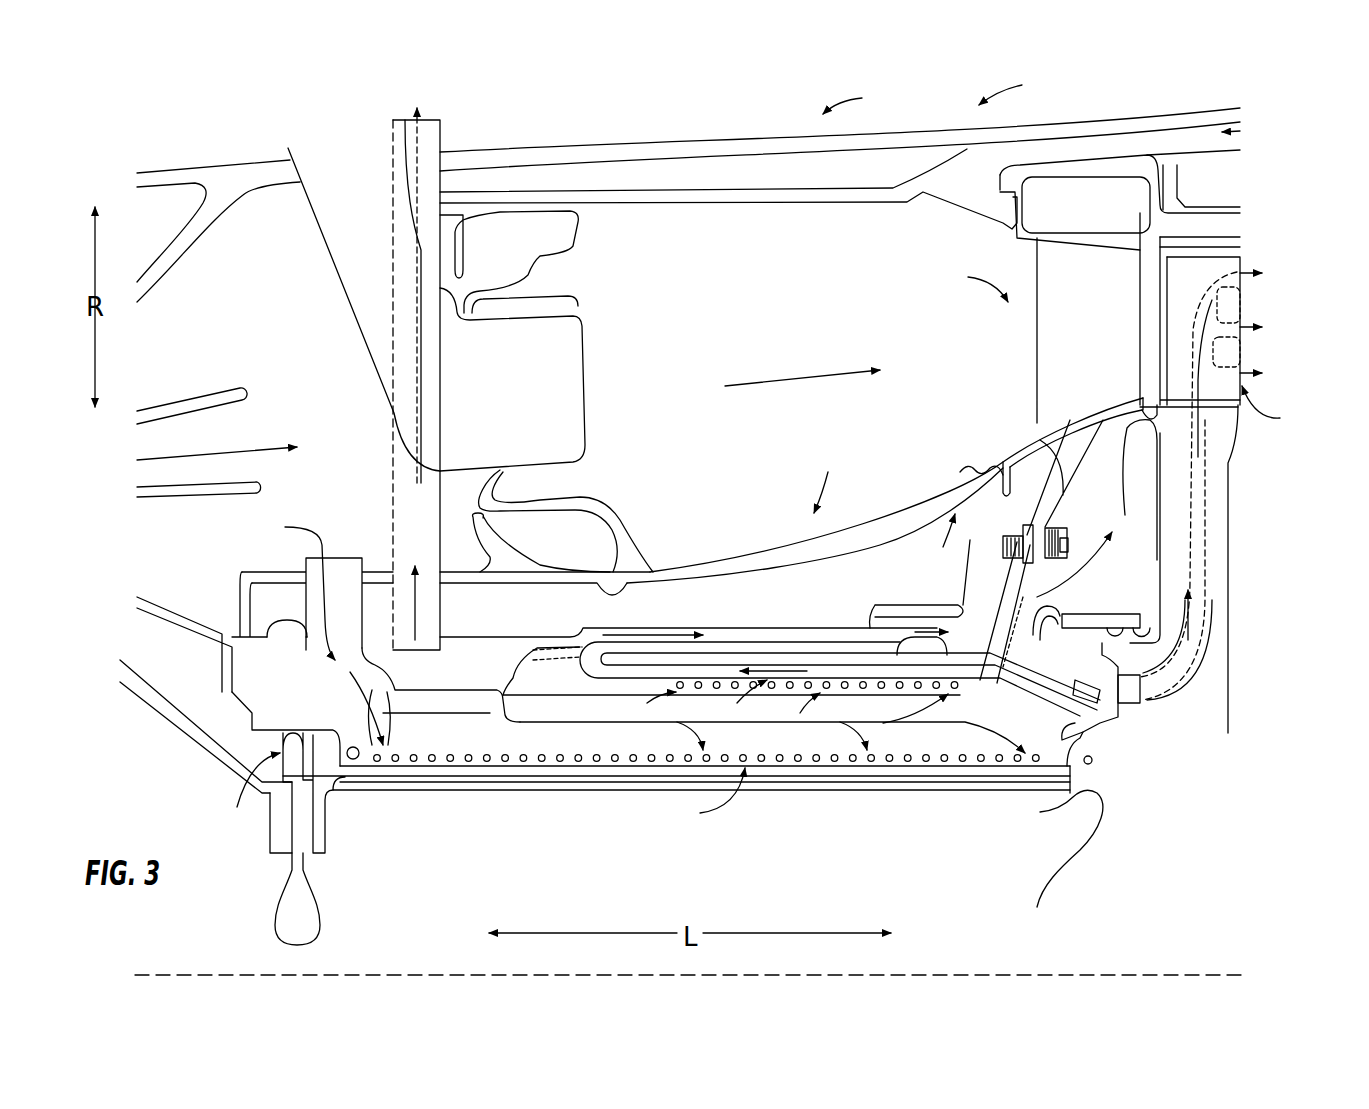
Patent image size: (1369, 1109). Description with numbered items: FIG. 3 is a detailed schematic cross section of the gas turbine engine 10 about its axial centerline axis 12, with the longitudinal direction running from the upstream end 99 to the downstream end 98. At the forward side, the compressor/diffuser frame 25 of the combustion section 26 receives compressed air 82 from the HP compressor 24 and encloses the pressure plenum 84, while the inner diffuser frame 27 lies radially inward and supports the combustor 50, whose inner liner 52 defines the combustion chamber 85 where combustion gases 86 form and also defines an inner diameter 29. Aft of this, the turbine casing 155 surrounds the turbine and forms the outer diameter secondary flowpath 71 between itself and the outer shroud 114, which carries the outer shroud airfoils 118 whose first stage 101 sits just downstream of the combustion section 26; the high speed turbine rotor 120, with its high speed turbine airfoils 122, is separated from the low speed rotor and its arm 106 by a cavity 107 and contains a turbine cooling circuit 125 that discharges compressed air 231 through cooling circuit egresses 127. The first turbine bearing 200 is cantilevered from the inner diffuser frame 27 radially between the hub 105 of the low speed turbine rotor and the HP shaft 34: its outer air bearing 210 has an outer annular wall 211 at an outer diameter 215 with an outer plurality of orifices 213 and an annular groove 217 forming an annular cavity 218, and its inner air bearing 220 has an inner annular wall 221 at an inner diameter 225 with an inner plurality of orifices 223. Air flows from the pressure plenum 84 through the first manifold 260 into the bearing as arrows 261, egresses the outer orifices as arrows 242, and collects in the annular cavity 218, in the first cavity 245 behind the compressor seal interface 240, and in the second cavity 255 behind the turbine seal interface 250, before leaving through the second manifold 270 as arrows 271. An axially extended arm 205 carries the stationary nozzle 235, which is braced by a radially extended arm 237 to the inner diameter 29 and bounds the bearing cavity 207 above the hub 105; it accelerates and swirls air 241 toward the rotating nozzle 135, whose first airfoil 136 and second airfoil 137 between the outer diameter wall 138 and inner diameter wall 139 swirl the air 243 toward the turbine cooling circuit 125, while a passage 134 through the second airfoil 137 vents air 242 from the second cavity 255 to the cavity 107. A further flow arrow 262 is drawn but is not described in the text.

The gas turbine engine 10 is at (1015, 84).
The axial centerline axis 12 is at (165, 975).
The HP compressor 24 is at (177, 716).
The compressor/diffuser frame 25 is at (704, 144).
The combustion section 26 is at (856, 95).
The inner diffuser frame 27 is at (183, 622).
The inner diameter 29 is at (570, 475).
The HP shaft 34 is at (828, 780).
The combustor 50 is at (829, 477).
The inner liner 52 is at (835, 560).
The outer diameter secondary flowpath 71 is at (1242, 130).
The compressed air 82 is at (195, 453).
The pressure plenum 84 is at (828, 185).
The combustion chamber 85 is at (769, 305).
The combustion gases 86 is at (785, 380).
The downstream end 98 is at (1303, 365).
The upstream end 99 is at (103, 480).
The first stage 101 is at (970, 280).
The hub 105 is at (727, 663).
The arm 106 is at (1057, 490).
The cavity 107 is at (1116, 485).
The outer shroud 114 is at (1060, 170).
The outer shroud airfoils 118 is at (1045, 270).
The high speed turbine rotor 120 is at (1206, 815).
The high speed turbine airfoils 122 is at (1201, 285).
The turbine cooling circuit 125 is at (1203, 545).
The cooling circuit egresses 127 is at (1271, 559).
The passage 134 is at (1003, 713).
The rotating nozzle 135 is at (987, 627).
The first airfoil 136 is at (1093, 673).
The second airfoil 137 is at (1010, 593).
The outer diameter wall 138 is at (1080, 613).
The inner diameter wall 139 is at (1047, 712).
The turbine casing 155 is at (1214, 110).
The first turbine bearing 200 is at (509, 672).
The axially extended arm 205 is at (687, 637).
The bearing cavity 207 is at (790, 650).
The outer air bearing 210 is at (868, 688).
The outer annular wall 211 is at (912, 707).
The outer plurality of orifices 213 is at (732, 702).
The outer diameter 215 is at (793, 708).
The annular groove 217 is at (643, 684).
The annular cavity 218 is at (643, 707).
The inner air bearing 220 is at (767, 757).
The inner annular wall 221 is at (973, 767).
The inner plurality of orifices 223 is at (598, 757).
The inner diameter 225 is at (706, 793).
The compressed air 231 is at (1233, 320).
The stationary nozzle 235 is at (897, 605).
The radially extended arm 237 is at (963, 560).
The compressor seal interface 240 is at (274, 839).
The air 241 is at (627, 650).
The air 242 is at (695, 677).
The air 243 is at (1040, 611).
The first cavity 245 is at (328, 757).
The turbine seal interface 250 is at (1052, 848).
The second cavity 255 is at (1093, 767).
The first manifold 260 is at (267, 641).
The air 261 is at (317, 585).
The outlet flow 262 is at (1103, 552).
The second manifold 270 is at (393, 532).
The air 271 is at (422, 108).